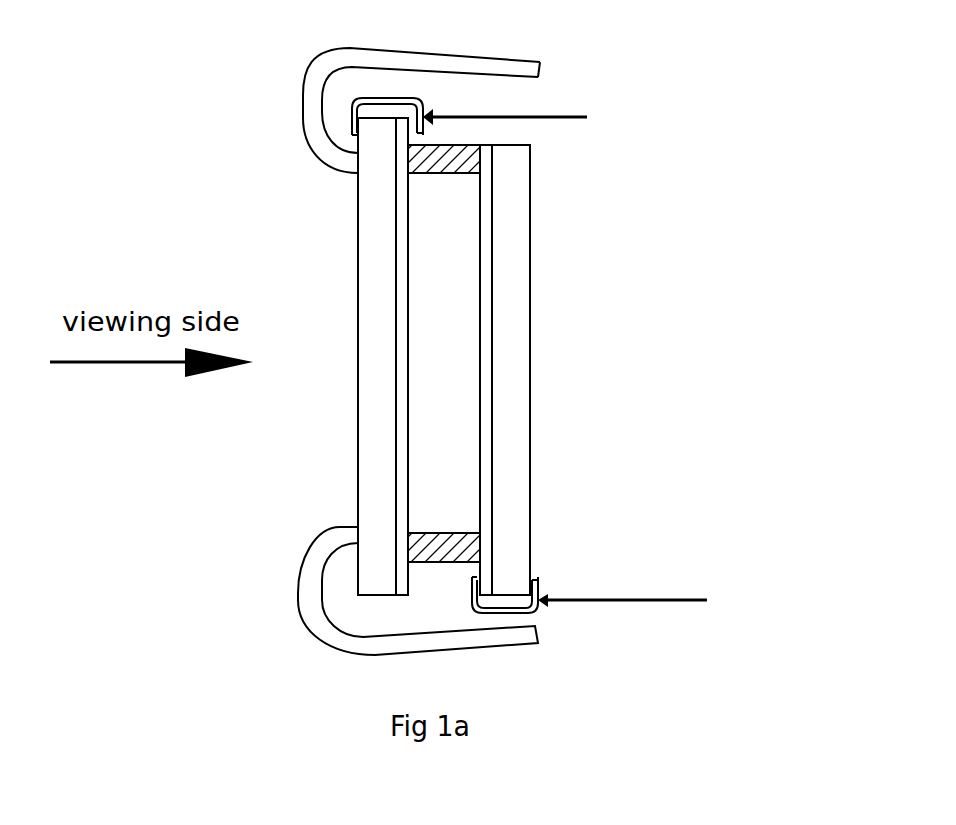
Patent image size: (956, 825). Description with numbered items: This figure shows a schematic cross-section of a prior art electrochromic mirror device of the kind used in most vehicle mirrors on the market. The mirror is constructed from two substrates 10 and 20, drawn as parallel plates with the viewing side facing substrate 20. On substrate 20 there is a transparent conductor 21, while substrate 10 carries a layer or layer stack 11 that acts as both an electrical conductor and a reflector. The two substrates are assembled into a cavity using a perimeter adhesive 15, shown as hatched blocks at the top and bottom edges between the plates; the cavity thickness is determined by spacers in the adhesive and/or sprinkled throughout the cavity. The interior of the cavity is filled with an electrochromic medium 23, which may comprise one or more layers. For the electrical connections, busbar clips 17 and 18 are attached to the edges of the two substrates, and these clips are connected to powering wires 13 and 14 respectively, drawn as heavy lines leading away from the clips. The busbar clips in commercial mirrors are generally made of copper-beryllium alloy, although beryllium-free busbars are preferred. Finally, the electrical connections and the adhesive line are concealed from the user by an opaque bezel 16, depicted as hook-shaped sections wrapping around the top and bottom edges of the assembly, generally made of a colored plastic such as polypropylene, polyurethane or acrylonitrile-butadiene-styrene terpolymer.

The substrate 10 is at (508, 417).
The layer or layer stack 11 is at (485, 368).
The powering wire 13 is at (558, 123).
The powering wire 14 is at (655, 600).
The perimeter adhesive 15 is at (458, 163).
The opaque bezel 16 is at (498, 65).
The busbar clip 17 is at (412, 99).
The busbar clip 18 is at (535, 585).
The substrate 20 is at (380, 462).
The transparent conductor 21 is at (400, 373).
The electrochromic medium 23 is at (445, 293).